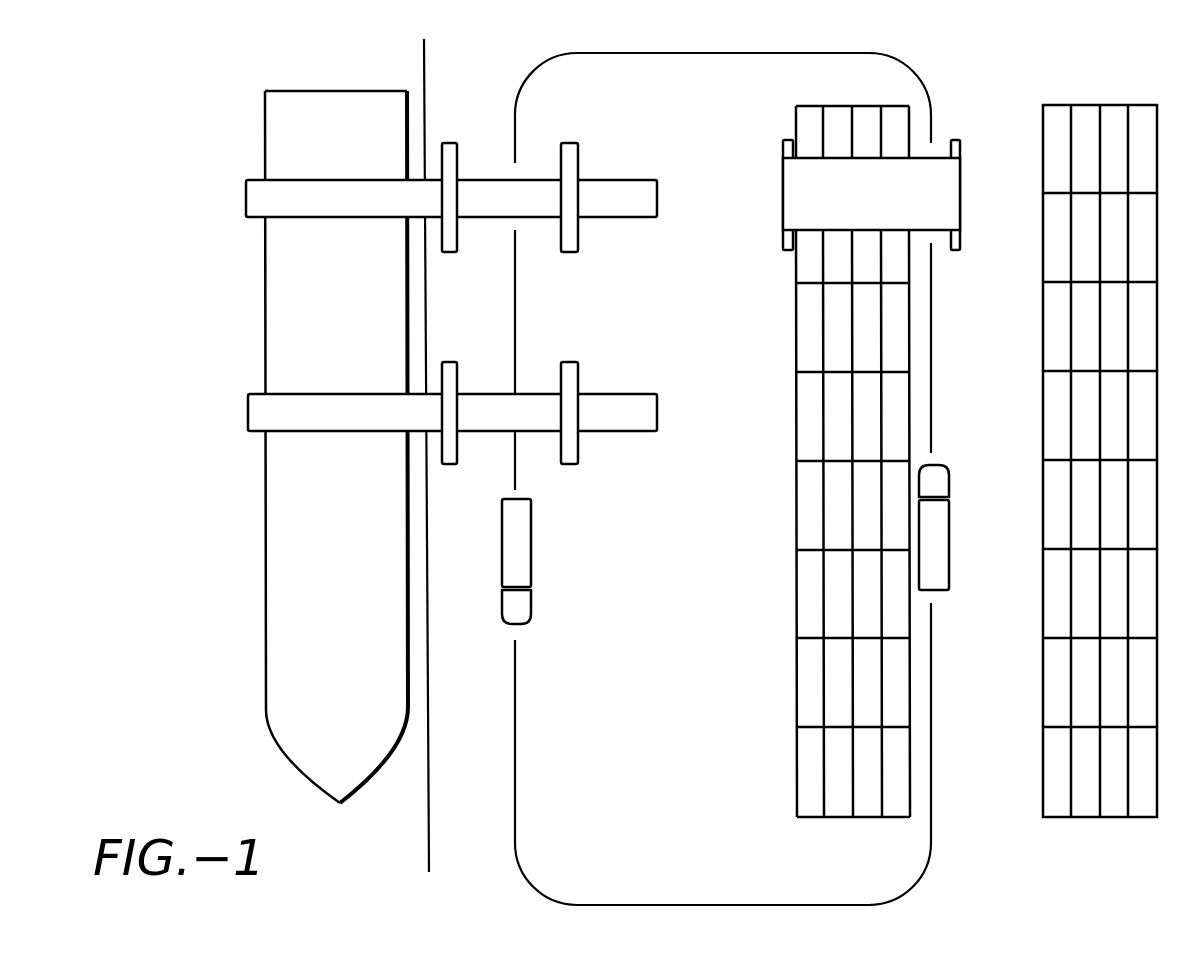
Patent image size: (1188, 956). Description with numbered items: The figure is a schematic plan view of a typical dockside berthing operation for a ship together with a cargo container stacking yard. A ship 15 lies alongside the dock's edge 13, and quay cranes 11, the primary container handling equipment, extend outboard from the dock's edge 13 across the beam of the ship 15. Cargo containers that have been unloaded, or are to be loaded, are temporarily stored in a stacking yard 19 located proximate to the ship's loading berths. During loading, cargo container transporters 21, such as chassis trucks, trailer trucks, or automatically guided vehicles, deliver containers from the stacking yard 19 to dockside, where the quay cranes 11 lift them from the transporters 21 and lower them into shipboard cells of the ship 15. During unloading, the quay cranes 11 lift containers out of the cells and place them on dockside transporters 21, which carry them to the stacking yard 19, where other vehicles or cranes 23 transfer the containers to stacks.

The quay crane 11 is at (246, 198).
The dock's edge 13 is at (424, 52).
The ship 15 is at (300, 91).
The stacking yard 19 is at (1016, 413).
The cargo container transporter 21 is at (532, 555).
The crane 23 is at (783, 188).